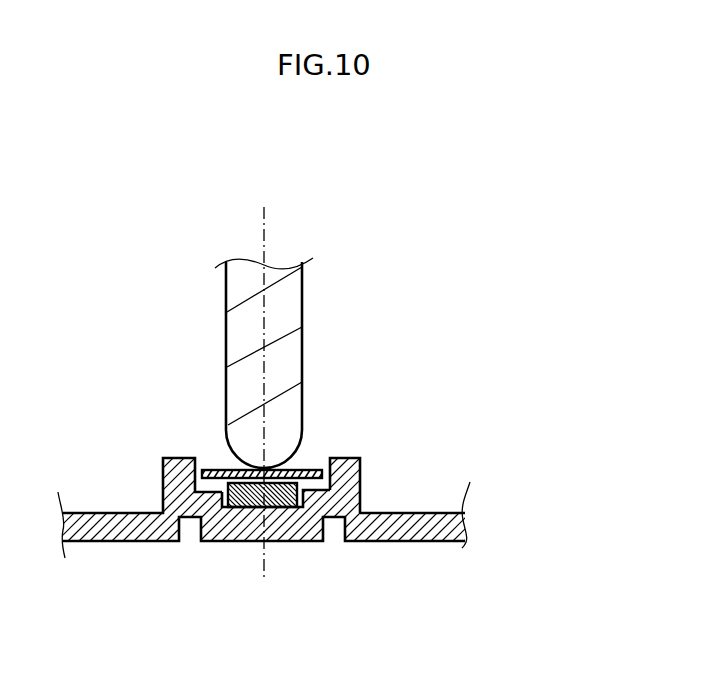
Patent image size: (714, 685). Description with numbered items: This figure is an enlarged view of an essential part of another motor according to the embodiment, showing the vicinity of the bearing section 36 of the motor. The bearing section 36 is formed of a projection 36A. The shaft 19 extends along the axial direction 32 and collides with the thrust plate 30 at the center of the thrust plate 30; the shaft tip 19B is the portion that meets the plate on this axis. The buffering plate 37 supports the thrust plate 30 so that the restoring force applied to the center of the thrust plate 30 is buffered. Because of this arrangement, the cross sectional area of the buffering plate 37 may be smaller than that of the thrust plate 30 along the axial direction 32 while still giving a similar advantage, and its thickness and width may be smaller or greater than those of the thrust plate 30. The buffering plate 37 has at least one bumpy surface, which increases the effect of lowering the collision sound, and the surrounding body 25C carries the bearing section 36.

The axial direction 32 is at (260, 238).
The shaft 19 is at (287, 290).
The probe tip 19B is at (265, 468).
The bearing section 36 is at (325, 458).
The projection 36A is at (348, 468).
The buffering plate 37 is at (283, 510).
The thrust plate 30 is at (310, 474).
The base plate 25C is at (425, 525).